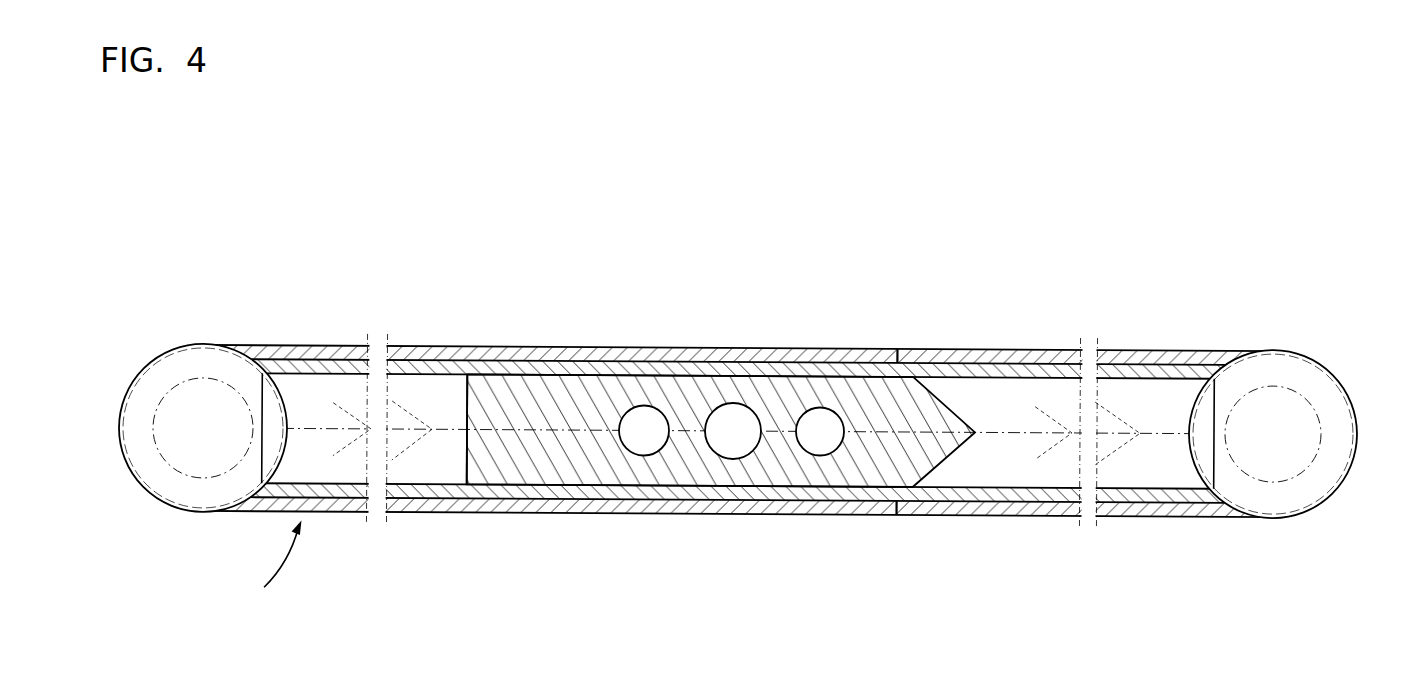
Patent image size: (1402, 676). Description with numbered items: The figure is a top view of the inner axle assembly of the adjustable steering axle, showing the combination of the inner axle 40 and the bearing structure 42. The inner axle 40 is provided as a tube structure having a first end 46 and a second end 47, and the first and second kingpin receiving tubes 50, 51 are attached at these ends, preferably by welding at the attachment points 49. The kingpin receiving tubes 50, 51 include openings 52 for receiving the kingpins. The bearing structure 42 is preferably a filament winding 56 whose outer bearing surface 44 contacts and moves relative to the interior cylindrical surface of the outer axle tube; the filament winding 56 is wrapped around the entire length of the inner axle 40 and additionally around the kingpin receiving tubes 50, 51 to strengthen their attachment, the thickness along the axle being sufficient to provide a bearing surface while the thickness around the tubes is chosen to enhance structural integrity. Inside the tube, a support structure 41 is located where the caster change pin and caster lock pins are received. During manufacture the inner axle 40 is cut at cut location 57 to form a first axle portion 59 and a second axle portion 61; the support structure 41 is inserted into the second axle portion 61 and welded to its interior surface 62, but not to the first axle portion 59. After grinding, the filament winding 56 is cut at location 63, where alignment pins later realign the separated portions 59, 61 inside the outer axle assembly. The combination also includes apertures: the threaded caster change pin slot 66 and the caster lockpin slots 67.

The inner axle 40 is at (667, 397).
The support structure 41 is at (783, 405).
The bearing structure 42 is at (592, 350).
The bearing surface 44 is at (505, 348).
The first end 46 is at (516, 513).
The second end 47 is at (271, 571).
The attachment points 49 is at (262, 397).
The first kingpin receiving tube 50 is at (1282, 498).
The second kingpin receiving tube 51 is at (163, 480).
The openings 52 is at (167, 396).
The filament winding 56 is at (1008, 350).
The cut location 57 is at (549, 376).
The first axle portion 59 is at (698, 497).
The second axle portion 61 is at (447, 489).
The interior surface 62 is at (440, 377).
The filament winding cut location 63 is at (898, 350).
The caster change pin slot 66 is at (743, 405).
The caster lockpin slots 67 is at (628, 410).